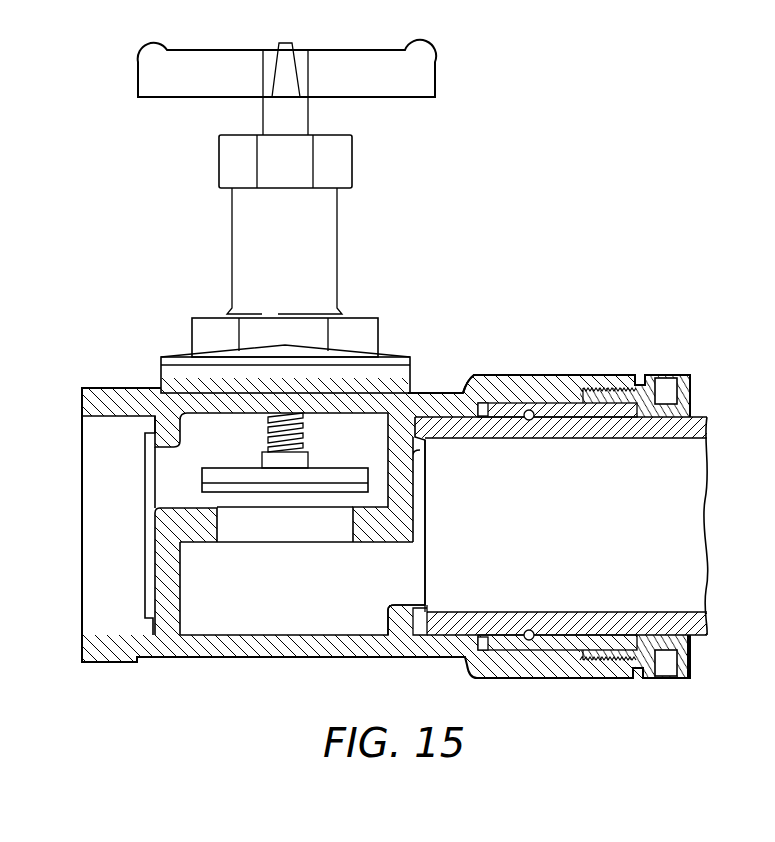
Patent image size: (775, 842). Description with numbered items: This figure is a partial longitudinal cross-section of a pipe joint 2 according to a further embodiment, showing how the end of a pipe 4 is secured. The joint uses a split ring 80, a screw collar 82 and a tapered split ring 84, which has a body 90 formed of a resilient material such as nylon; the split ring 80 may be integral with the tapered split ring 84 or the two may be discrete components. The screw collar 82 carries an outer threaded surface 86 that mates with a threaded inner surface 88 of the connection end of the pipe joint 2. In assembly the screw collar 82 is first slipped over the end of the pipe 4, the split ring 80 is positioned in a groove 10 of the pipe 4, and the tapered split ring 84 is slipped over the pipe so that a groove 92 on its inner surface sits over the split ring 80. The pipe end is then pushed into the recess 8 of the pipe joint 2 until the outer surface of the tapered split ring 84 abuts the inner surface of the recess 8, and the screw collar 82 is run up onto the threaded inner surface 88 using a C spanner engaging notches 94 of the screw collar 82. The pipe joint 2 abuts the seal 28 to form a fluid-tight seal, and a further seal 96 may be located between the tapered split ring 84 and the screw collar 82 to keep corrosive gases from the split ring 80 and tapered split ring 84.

The pipe joint 2 is at (214, 664).
The pipe 4 is at (660, 440).
The recess 8 is at (470, 385).
The groove 10 is at (545, 440).
The seal 28 is at (412, 637).
The split ring 80 is at (543, 403).
The screw collar 82 is at (693, 399).
The tapered split ring 84 is at (512, 418).
The outer threaded surface 86 is at (598, 388).
The threaded inner surface 88 is at (605, 665).
The body 90 is at (540, 642).
The groove 92 is at (525, 643).
The notches 94 is at (672, 392).
The seal 96 is at (590, 650).